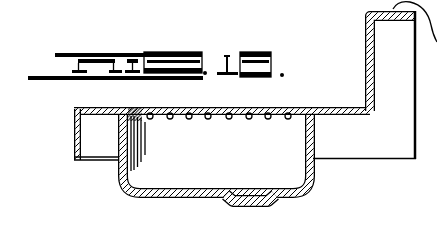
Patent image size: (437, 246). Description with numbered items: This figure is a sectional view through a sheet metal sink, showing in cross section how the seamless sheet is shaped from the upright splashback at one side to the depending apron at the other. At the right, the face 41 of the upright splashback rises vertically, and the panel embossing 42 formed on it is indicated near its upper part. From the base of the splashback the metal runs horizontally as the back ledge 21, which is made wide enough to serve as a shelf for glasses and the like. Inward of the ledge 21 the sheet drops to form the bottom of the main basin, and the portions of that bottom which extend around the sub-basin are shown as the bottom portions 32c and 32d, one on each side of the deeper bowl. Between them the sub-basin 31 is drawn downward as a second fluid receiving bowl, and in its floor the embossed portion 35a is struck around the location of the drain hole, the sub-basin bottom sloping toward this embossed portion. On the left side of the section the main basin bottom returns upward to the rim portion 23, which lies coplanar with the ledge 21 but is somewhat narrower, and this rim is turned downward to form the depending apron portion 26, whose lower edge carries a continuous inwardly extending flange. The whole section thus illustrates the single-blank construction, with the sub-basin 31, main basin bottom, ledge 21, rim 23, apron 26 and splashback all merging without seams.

The back ledge 21 is at (323, 108).
The rim portion 23 is at (97, 107).
The depending apron portion 26 is at (77, 143).
The sub-basin 31 is at (137, 180).
The bottom portion of main basin 32c is at (310, 110).
The bottom portion of main basin 32d is at (135, 125).
The embossed portion 35a is at (234, 207).
The splashback face 41 is at (366, 21).
The panel embossing 42 is at (367, 40).